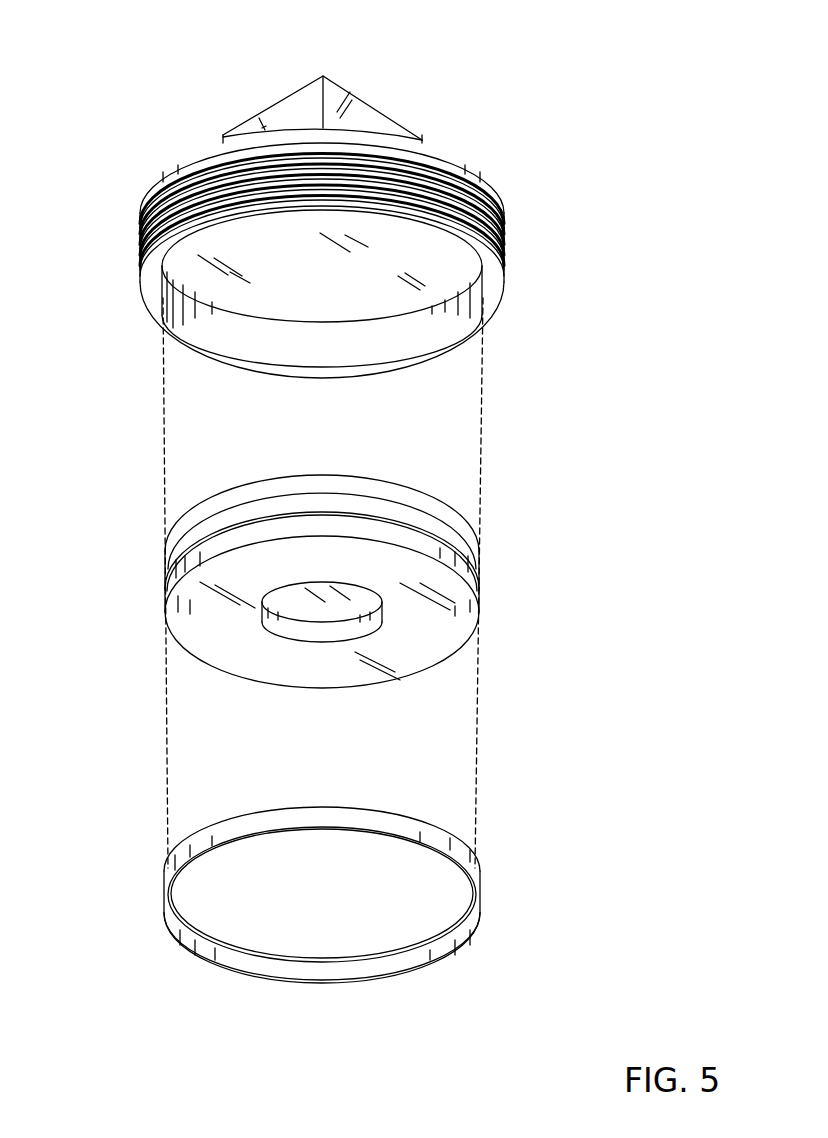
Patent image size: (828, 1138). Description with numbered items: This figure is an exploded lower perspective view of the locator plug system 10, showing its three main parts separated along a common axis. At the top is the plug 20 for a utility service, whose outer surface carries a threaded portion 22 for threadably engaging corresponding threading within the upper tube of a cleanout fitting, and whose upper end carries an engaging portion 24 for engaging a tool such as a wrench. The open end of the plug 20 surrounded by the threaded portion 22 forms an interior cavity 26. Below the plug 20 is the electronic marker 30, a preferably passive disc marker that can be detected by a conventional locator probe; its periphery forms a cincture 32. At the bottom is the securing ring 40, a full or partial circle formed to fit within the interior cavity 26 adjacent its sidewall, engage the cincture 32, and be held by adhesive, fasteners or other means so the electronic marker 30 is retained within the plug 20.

The locator plug system 10 is at (501, 101).
The plug 20 is at (248, 348).
The threaded portion 22 is at (142, 245).
The engaging portion 24 is at (287, 115).
The interior cavity 26 is at (377, 297).
The electronic marker 30 is at (421, 642).
The cincture 32 is at (167, 567).
The securing ring 40 is at (262, 967).